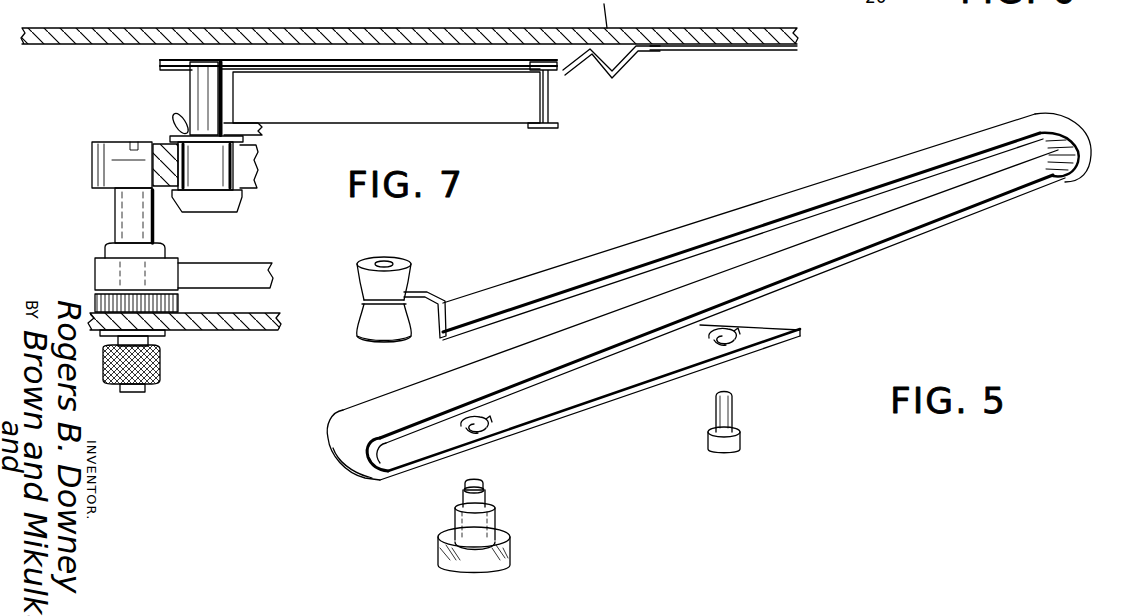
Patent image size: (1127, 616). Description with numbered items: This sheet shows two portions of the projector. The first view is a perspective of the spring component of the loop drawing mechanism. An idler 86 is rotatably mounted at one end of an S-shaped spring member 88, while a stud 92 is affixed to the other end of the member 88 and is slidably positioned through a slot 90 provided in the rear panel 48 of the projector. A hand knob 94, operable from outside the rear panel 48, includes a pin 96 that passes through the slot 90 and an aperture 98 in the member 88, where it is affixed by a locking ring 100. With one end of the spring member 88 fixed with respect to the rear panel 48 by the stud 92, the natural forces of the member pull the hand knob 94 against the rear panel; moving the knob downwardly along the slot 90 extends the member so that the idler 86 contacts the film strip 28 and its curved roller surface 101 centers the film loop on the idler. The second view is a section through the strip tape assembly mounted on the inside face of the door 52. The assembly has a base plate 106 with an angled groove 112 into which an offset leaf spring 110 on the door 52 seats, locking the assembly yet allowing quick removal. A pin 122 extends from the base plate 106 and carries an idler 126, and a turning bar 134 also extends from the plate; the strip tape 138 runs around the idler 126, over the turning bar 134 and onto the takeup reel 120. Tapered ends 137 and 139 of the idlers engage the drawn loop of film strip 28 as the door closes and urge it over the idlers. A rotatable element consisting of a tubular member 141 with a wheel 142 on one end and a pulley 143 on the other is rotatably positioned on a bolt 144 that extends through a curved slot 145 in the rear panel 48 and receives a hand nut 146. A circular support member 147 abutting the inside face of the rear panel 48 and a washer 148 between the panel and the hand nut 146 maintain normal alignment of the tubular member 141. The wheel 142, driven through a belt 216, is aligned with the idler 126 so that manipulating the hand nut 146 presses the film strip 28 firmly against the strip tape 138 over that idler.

In FIG. 7, the door 52 is at (86, 30).
In FIG. 7, the base plate 106 is at (352, 47).
In FIG. 7, the angled groove 112 is at (722, 30).
In FIG. 7, the offset leaf spring 110 is at (621, 68).
In FIG. 7, the idler 126 is at (621, 16).
In FIG. 7, the tapered end 139 is at (813, 2).
In FIG. 7, the turning bar 134 is at (694, 4).
In FIG. 7, the strip tape 138 is at (379, 100).
In FIG. 7, the takeup reel 120 is at (531, 130).
In FIG. 7, the pin 122 is at (196, 92).
In FIG. 7, the wheel 142 is at (92, 157).
In FIG. 7, the tapered end 137 is at (238, 207).
In FIG. 7, the film strip 28 is at (170, 195).
In FIG. 7, the tubular member 141 is at (115, 203).
In FIG. 7, the bolt 144 is at (115, 222).
In FIG. 7, the pulley 143 is at (166, 252).
In FIG. 7, the belt 216 is at (97, 273).
In FIG. 7, the circular support member 147 is at (178, 304).
In FIG. 7, the rear panel 48 is at (271, 323).
In FIG. 7, the washer 148 is at (158, 333).
In FIG. 7, the curved slot 145 is at (150, 333).
In FIG. 7, the hand nut 146 is at (160, 362).
In FIG. 5, the S-shaped spring member 88 is at (808, 270).
In FIG. 5, the slot 90 is at (590, 402).
In FIG. 5, the aperture 98 is at (487, 420).
In FIG. 5, the locking ring 100 is at (478, 432).
In FIG. 5, the idler 86 is at (372, 330).
In FIG. 5, the curved roller surface 101 is at (362, 290).
In FIG. 5, the stud 92 is at (733, 422).
In FIG. 5, the pin 96 is at (485, 503).
In FIG. 5, the hand knob 94 is at (510, 540).